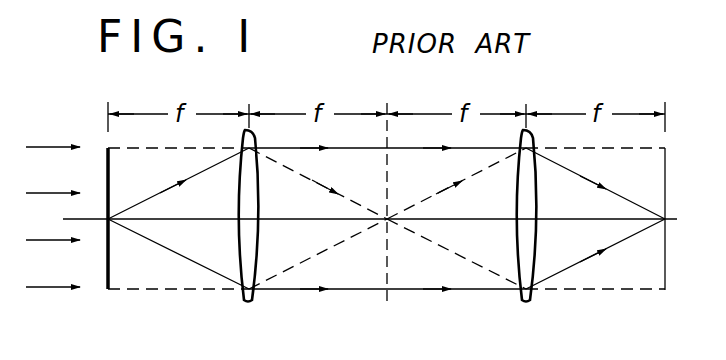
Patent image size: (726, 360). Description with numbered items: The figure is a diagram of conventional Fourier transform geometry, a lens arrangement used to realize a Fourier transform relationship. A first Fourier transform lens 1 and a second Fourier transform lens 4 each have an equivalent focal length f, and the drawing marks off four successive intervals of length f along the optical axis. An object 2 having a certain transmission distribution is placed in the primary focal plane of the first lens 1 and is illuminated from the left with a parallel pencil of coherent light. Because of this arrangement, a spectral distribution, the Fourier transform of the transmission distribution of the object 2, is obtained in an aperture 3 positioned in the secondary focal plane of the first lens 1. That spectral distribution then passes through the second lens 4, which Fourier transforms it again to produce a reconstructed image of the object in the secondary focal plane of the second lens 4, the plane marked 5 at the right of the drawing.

The first Fourier transform lens 1 is at (241, 301).
The object 2 is at (107, 290).
The aperture 3 is at (386, 298).
The second Fourier transform lens 4 is at (521, 297).
The image plane 5 is at (663, 289).